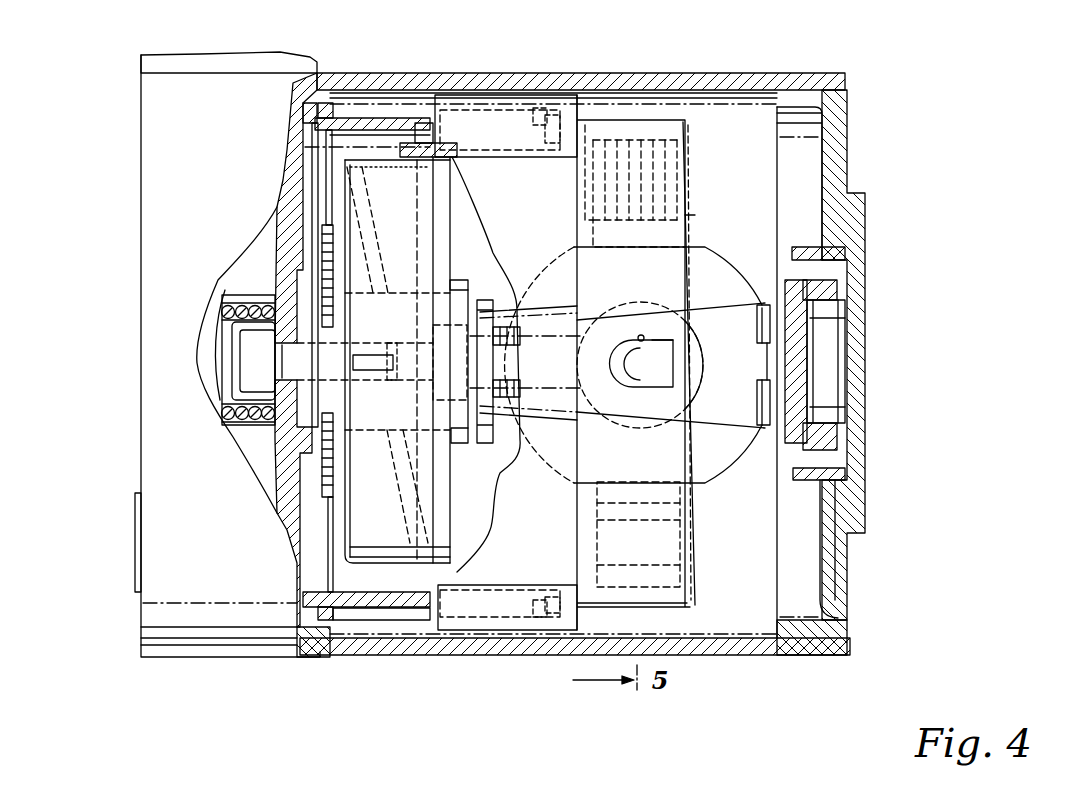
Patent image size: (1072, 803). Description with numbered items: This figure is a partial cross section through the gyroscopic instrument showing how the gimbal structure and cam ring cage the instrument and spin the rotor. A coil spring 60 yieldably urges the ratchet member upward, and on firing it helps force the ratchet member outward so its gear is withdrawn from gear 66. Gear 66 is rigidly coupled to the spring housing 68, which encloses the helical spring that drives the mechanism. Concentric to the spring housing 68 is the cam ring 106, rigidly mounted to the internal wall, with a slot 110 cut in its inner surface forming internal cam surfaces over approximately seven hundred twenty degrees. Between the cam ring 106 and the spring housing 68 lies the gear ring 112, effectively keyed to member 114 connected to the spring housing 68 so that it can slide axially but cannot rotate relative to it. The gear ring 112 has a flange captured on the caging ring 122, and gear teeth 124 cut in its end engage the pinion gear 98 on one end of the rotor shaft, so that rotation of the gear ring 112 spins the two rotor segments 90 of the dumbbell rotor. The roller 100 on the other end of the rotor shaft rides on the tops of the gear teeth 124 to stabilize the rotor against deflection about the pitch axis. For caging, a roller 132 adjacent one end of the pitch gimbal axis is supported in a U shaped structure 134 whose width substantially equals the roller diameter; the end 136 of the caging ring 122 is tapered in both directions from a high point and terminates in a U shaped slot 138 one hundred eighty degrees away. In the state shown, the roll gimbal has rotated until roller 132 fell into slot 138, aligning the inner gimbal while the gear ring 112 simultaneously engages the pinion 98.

The coil spring 60 is at (262, 420).
The gear 66 is at (330, 225).
The spring housing 68 is at (365, 547).
The rotor segments 90 is at (733, 270).
The pinion gear 98 is at (693, 133).
The roller 100 is at (690, 570).
The cam ring 106 is at (372, 118).
The slot 110 is at (348, 128).
The gear ring 112 is at (417, 120).
The member 114 is at (375, 357).
The caging ring 122 is at (455, 97).
The gear teeth 124 is at (593, 140).
The roller 132 is at (615, 378).
The U shaped structure 134 is at (657, 340).
The end of the caging ring 136 is at (690, 215).
The U shaped slot 138 is at (641, 336).